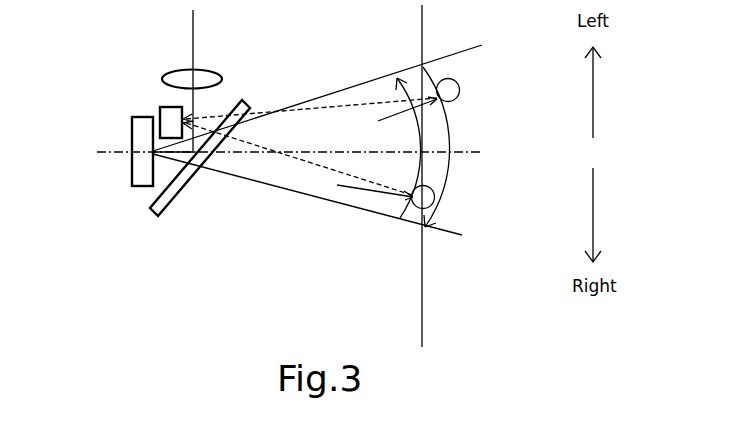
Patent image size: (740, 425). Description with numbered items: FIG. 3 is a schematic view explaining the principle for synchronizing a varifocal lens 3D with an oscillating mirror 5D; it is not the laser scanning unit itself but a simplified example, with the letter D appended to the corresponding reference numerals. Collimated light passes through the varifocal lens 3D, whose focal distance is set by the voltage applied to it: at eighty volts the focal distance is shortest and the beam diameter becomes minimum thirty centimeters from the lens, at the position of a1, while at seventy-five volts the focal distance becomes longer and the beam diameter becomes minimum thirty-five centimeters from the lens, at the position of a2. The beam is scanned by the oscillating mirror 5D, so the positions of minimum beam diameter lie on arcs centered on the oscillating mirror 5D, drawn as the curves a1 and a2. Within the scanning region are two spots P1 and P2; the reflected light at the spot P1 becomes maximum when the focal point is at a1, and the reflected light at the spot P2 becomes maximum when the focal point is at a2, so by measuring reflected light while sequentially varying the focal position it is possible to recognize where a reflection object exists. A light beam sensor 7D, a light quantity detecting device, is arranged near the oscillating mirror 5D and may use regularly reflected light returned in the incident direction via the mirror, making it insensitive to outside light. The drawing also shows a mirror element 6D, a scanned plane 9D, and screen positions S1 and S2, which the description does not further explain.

The varifocal lens 3D is at (218, 65).
The oscillating mirror 5D is at (135, 168).
The mirror 6D is at (175, 197).
The light beam sensor 7D is at (157, 110).
The screen 9D is at (423, 308).
The spot P1 is at (435, 194).
The spot P2 is at (460, 88).
The position of a1 is at (421, 150).
The position of a2 is at (452, 150).
The first screen position S1 is at (446, 259).
The second screen position S2 is at (406, 46).